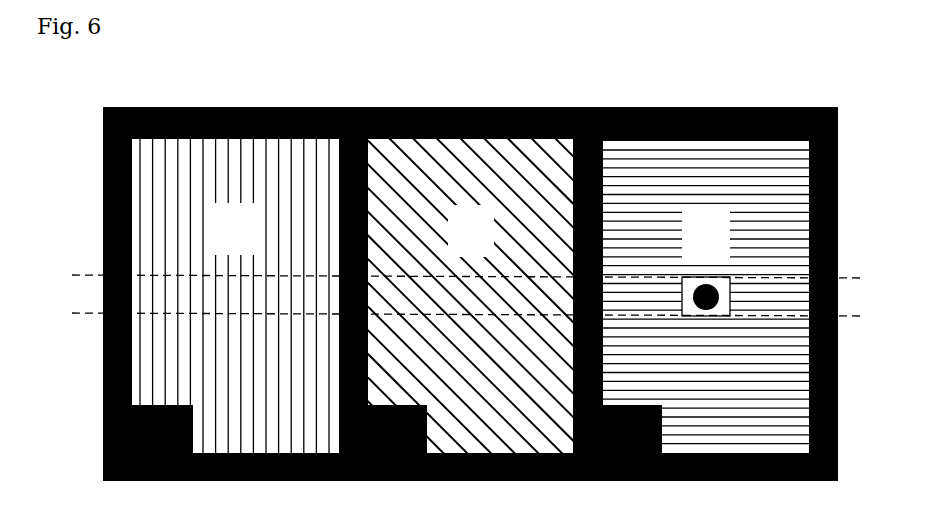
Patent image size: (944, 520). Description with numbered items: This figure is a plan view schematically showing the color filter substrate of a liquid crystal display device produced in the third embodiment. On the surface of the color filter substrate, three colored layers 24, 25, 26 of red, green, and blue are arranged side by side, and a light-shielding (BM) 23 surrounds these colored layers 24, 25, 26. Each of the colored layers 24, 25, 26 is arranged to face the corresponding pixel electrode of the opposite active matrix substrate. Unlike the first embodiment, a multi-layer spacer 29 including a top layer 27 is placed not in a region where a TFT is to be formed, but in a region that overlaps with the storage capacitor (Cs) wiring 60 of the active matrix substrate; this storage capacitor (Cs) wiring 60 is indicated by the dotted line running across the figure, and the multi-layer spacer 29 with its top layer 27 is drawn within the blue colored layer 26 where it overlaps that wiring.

The light-shielding (BM) 23 is at (837, 178).
The colored layer (red) 24 is at (246, 153).
The colored layer (green) 25 is at (479, 150).
The colored layer (blue) 26 is at (713, 158).
The top layer 27 is at (722, 300).
The multi-layer spacer 29 is at (722, 287).
The storage capacitor (Cs) wiring 60 is at (90, 297).